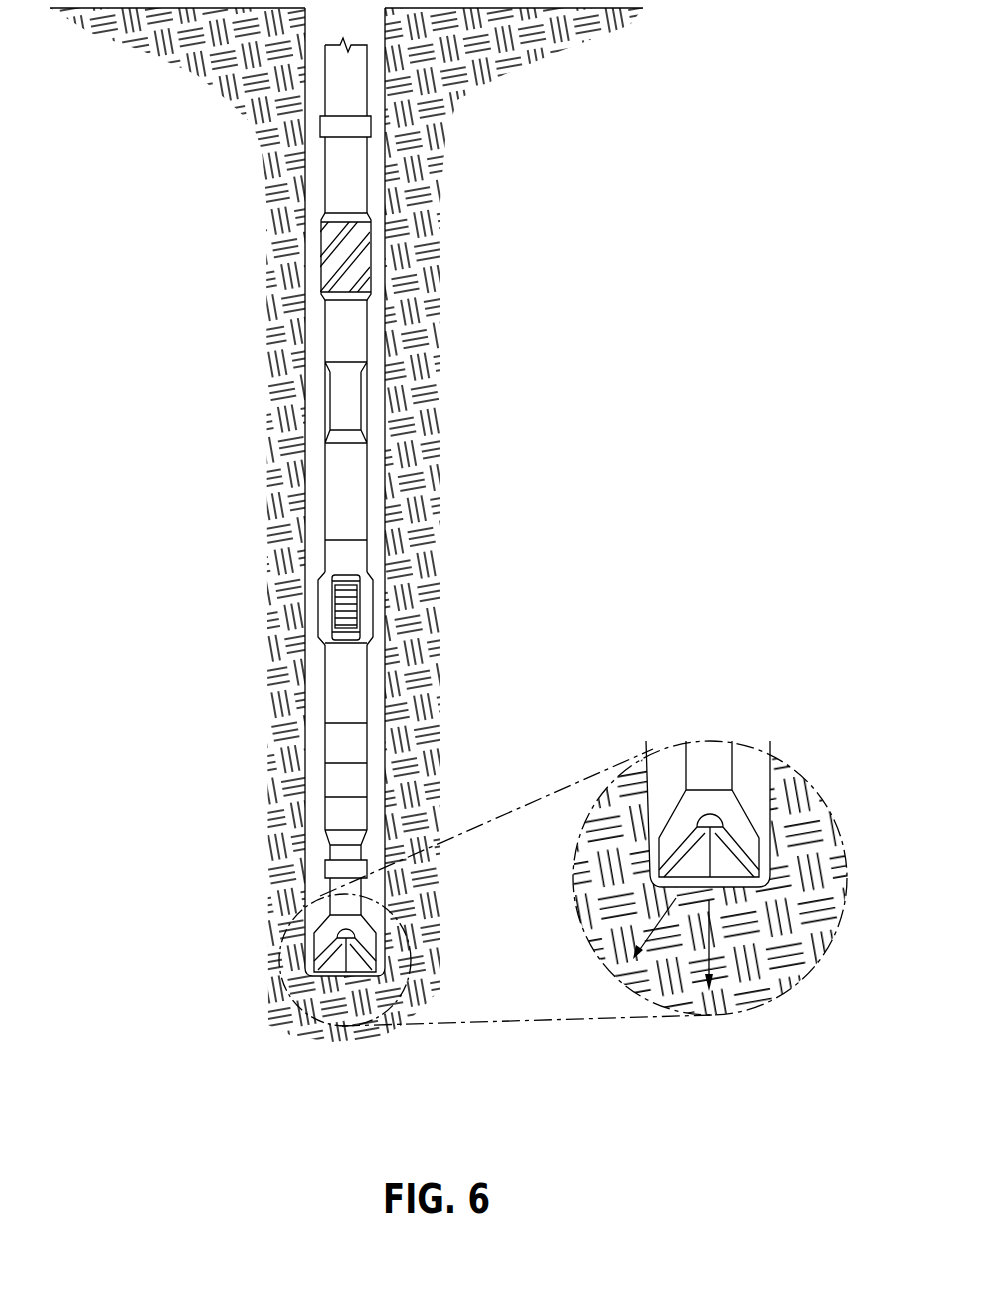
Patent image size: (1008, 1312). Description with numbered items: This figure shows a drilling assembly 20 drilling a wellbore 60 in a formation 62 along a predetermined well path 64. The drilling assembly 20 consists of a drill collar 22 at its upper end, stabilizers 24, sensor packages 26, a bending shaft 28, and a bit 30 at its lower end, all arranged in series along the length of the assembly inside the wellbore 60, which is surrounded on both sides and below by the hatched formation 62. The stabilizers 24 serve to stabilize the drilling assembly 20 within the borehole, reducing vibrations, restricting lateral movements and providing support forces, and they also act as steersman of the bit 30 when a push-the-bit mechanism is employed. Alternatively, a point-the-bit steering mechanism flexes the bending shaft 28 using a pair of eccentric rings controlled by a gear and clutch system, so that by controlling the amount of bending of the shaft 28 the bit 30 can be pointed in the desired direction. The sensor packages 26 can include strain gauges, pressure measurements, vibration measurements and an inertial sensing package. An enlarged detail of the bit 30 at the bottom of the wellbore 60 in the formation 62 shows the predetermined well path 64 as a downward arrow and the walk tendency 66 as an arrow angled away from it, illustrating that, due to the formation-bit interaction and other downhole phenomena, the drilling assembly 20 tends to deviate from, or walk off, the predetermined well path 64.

The drilling assembly 20 is at (324, 471).
The drill collar 22 is at (343, 83).
The stabilizers 24 is at (322, 256).
The sensor packages 26 is at (320, 607).
The bending shaft 28 is at (330, 853).
The bit 30 is at (310, 928).
The wellbore 60 is at (376, 340).
The formation 62 is at (272, 68).
The predetermined well path 64 is at (717, 950).
The walk tendency 66 is at (660, 900).